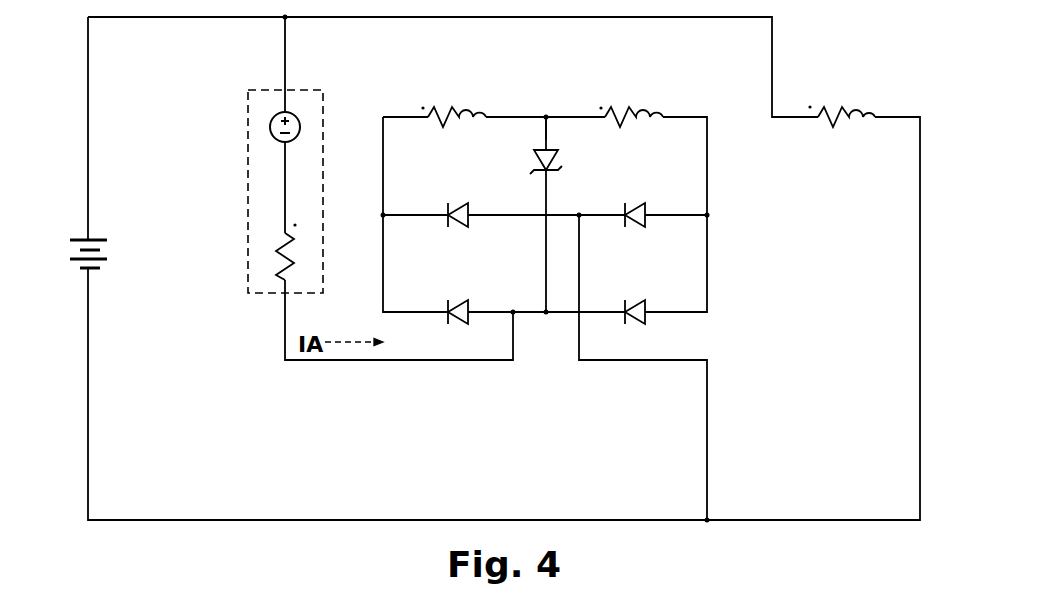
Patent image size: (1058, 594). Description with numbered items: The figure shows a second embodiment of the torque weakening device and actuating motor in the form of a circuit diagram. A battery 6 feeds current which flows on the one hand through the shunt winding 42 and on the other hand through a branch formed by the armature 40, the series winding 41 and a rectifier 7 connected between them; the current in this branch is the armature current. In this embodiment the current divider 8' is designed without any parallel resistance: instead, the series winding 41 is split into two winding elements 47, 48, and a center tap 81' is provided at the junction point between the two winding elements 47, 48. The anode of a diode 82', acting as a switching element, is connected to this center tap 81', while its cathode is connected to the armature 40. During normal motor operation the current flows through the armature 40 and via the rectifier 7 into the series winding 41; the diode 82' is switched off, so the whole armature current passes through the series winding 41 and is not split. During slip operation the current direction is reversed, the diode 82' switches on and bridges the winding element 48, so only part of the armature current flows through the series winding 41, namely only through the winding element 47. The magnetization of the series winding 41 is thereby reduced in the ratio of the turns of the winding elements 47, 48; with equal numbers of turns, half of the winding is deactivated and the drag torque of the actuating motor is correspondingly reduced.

The battery 6 is at (102, 250).
The rectifier 7 is at (725, 285).
The armature 40 is at (248, 143).
The series winding 41 is at (553, 123).
The shunt winding 42 is at (857, 120).
The winding element 47 is at (479, 122).
The winding element 48 is at (652, 150).
The center tap 81' is at (576, 161).
The diode 82' is at (501, 174).
The current divider 8' is at (614, 161).